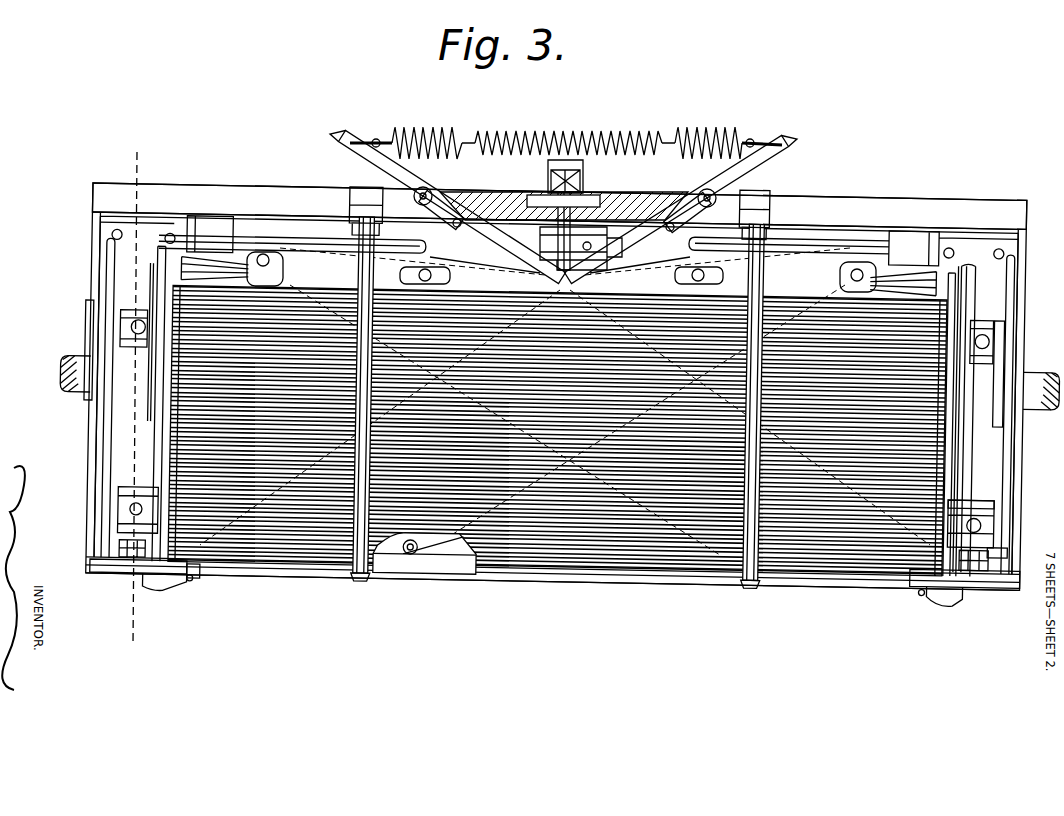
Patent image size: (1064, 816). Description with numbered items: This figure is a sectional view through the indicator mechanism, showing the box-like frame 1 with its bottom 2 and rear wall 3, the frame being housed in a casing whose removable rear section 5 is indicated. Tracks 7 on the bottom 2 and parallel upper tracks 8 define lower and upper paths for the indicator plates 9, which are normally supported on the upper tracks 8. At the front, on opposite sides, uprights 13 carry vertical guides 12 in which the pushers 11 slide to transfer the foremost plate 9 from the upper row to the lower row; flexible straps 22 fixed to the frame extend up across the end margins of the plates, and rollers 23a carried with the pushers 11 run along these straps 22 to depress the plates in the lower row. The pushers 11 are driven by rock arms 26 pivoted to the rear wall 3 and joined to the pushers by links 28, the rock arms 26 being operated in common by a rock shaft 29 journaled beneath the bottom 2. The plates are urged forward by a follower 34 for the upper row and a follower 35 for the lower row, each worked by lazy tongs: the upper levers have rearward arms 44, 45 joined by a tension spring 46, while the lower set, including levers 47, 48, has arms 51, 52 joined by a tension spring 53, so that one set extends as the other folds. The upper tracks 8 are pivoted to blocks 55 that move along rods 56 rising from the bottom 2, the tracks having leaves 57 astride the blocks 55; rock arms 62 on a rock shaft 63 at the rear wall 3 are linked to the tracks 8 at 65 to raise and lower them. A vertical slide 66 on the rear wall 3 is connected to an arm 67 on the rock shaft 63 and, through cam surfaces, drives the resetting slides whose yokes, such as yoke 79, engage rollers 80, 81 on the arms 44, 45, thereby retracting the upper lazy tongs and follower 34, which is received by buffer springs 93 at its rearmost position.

The frame 1 is at (987, 302).
The bottom 2 is at (1008, 462).
The rear wall 3 is at (276, 196).
The rear section 5 is at (134, 399).
The tracks 7 is at (892, 617).
The tracks 8 is at (950, 284).
The indicator plates 9 is at (255, 555).
The pushers 11 is at (983, 582).
The guides 12 is at (956, 600).
The uprights 13 is at (975, 592).
The straps 22 is at (210, 570).
The rollers 23a is at (922, 595).
The rock arms 26 is at (1013, 487).
The links 28 is at (1003, 552).
The rock shaft 29 is at (1030, 412).
The follower 34 is at (293, 287).
The follower 35 is at (409, 560).
The arm 44 is at (378, 132).
The arm 45 is at (746, 136).
The tension spring 46 is at (714, 133).
The lever 47 is at (443, 548).
The lever 48 is at (628, 574).
The arm 51 is at (345, 128).
The arm 52 is at (784, 152).
The tension spring 53 is at (530, 128).
The blocks 55 is at (1000, 348).
The rods 56 is at (987, 515).
The leaves 57 is at (967, 503).
The rock arms 62 is at (963, 380).
The rock shaft 63 is at (858, 245).
The connection point 65 is at (985, 530).
The slide 66 is at (583, 190).
The arm 67 is at (548, 190).
The yoke 79 is at (690, 196).
The roller 80 is at (428, 190).
The roller 81 is at (680, 194).
The buffer springs 93 is at (903, 275).